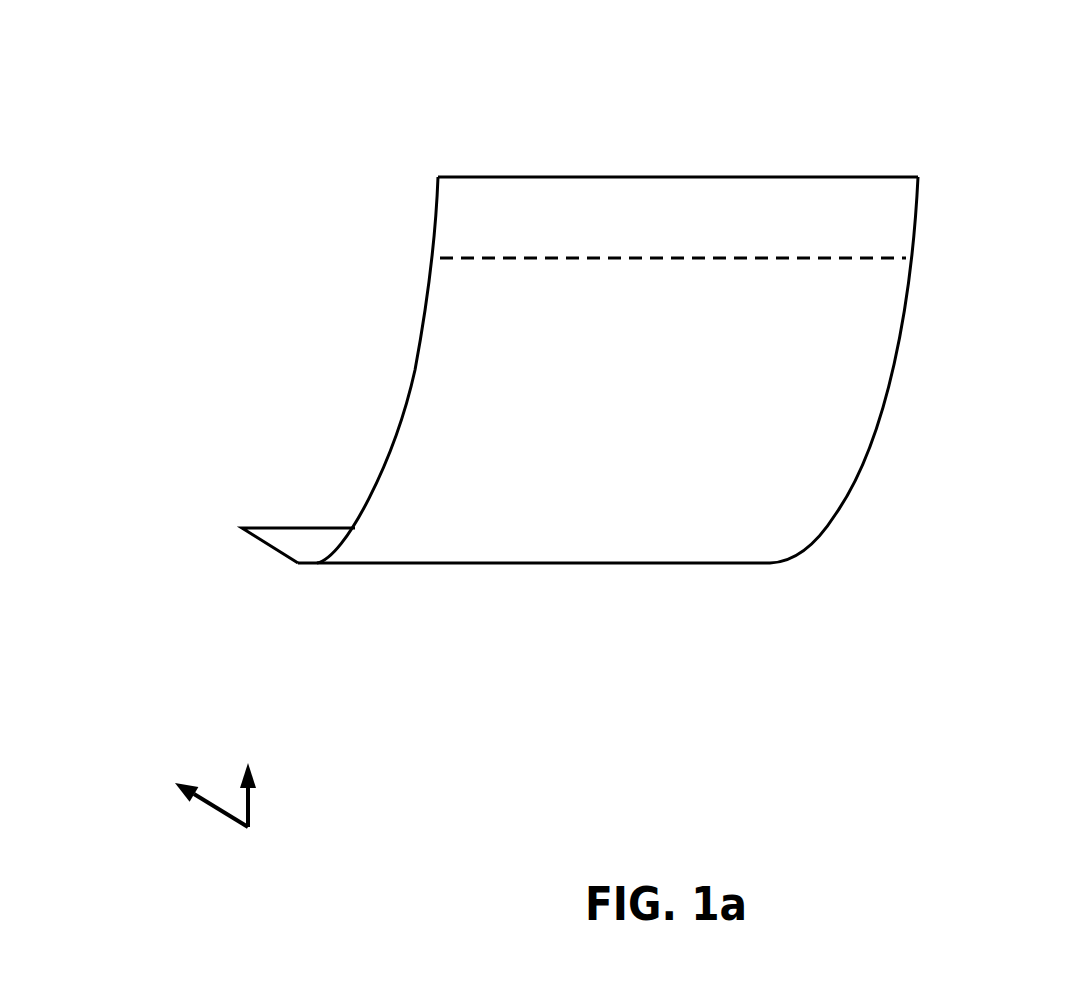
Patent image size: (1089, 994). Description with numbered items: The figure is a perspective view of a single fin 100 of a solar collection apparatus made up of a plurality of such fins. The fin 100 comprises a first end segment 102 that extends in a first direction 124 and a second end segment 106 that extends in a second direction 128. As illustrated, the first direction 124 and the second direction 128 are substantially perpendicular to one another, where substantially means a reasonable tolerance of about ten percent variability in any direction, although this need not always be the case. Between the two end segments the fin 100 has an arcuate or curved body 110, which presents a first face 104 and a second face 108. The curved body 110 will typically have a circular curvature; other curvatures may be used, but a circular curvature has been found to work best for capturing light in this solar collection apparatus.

The fin 100 is at (868, 162).
The first end segment 102 is at (894, 226).
The first face 104 is at (873, 373).
The second end segment 106 is at (302, 543).
The second face 108 is at (426, 307).
The curved body 110 is at (556, 486).
The first direction 124 is at (262, 802).
The second direction 128 is at (192, 775).